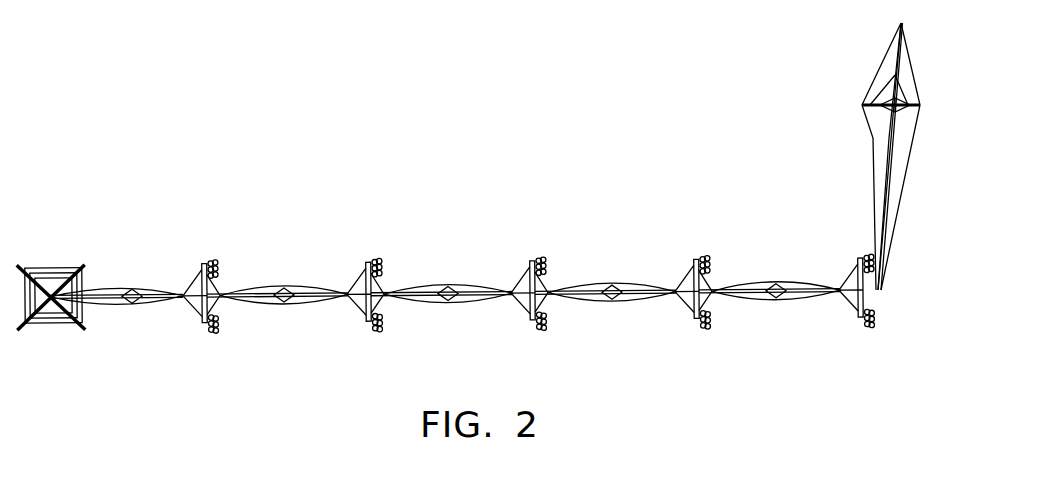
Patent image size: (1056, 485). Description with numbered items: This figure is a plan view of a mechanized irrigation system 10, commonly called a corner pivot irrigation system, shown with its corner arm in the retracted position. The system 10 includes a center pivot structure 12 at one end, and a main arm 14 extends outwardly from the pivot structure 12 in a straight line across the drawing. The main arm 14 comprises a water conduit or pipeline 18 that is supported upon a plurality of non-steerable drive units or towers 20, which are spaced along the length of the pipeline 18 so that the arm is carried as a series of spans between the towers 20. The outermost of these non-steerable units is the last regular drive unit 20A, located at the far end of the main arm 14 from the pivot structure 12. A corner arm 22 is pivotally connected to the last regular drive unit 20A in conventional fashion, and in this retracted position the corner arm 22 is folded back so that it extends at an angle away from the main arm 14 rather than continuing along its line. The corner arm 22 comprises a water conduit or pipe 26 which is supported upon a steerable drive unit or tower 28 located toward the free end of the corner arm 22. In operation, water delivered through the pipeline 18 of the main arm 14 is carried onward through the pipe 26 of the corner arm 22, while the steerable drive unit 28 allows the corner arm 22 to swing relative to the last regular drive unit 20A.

The mechanized irrigation system 10 is at (575, 246).
The center pivot structure 12 is at (53, 266).
The main arm 14 is at (328, 262).
The water conduit or pipeline 18 is at (438, 289).
The non-steerable drive units or towers 20 is at (518, 319).
The last regular drive unit 20A is at (872, 298).
The corner arm 22 is at (947, 156).
The water conduit or pipe 26 is at (884, 232).
The steerable drive unit or tower 28 is at (922, 102).